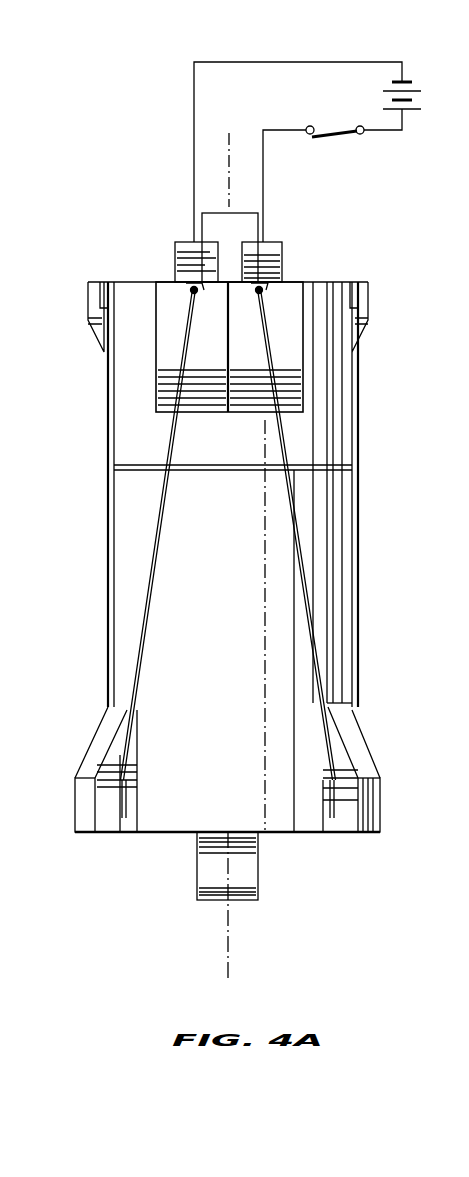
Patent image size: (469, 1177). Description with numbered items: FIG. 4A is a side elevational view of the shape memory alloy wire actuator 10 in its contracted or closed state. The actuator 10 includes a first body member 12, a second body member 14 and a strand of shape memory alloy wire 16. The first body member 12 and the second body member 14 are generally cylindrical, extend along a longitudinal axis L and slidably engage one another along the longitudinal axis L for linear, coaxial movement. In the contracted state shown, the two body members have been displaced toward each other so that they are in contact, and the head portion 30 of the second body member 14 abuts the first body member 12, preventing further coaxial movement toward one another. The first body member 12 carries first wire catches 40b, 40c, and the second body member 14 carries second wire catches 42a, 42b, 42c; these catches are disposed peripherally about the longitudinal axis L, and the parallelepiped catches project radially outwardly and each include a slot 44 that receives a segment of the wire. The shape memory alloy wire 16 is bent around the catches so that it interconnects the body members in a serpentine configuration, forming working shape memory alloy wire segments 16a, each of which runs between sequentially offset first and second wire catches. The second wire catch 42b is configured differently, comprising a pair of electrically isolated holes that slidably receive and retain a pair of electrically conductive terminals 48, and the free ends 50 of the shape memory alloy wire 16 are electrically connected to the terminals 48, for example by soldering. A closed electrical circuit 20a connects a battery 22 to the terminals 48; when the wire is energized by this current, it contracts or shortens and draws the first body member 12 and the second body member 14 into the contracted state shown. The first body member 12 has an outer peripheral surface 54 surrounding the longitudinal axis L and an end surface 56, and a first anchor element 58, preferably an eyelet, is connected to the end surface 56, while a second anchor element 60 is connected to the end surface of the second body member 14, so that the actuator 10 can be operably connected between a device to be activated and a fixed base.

The shape memory alloy wire actuator 10 is at (92, 472).
The first body member 12 is at (361, 641).
The second body member 14 is at (366, 364).
The strand of shape memory alloy wire 16 is at (284, 487).
The working shape memory alloy wire segments 16a is at (108, 569).
The closed electrical circuit 20a is at (255, 62).
The battery 22 is at (412, 84).
The head portion 30 is at (335, 445).
The first wire catch 40b is at (78, 812).
The first wire catch 40c is at (382, 812).
The second wire catch 42a is at (88, 302).
The second wire catch 42b is at (213, 412).
The second wire catch 42c is at (368, 302).
The slot 44 is at (106, 282).
The electrically conductive terminals 48 is at (177, 248).
The free ends 50 is at (204, 297).
The outer peripheral surface 54 is at (266, 759).
The end surface 56 is at (287, 834).
The first anchor element 58 is at (217, 873).
The second anchor element 60 is at (260, 226).
The longitudinal axis L is at (233, 954).